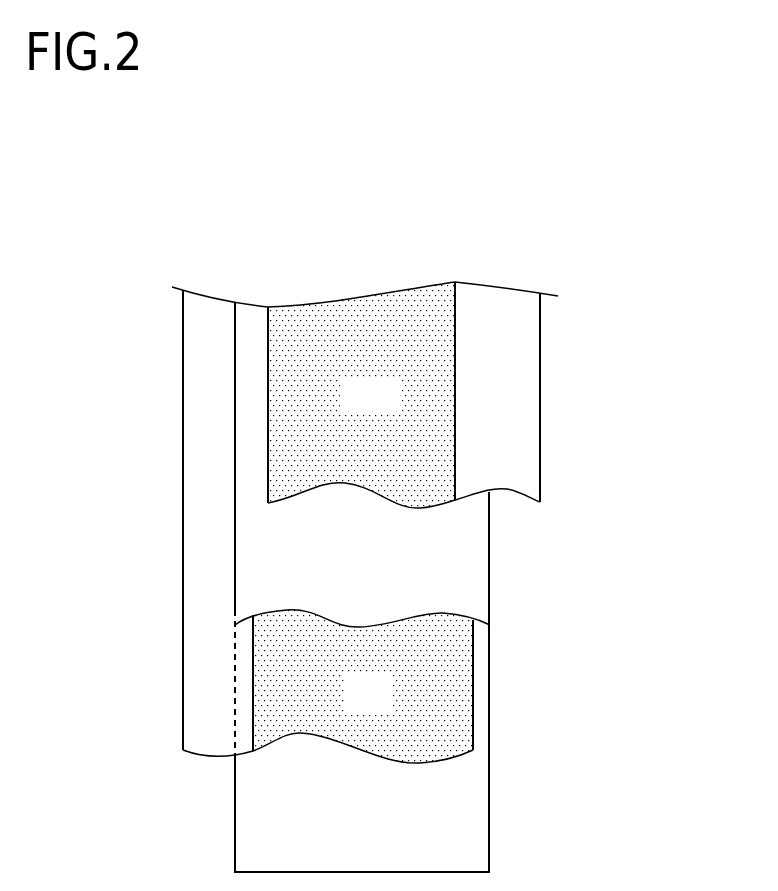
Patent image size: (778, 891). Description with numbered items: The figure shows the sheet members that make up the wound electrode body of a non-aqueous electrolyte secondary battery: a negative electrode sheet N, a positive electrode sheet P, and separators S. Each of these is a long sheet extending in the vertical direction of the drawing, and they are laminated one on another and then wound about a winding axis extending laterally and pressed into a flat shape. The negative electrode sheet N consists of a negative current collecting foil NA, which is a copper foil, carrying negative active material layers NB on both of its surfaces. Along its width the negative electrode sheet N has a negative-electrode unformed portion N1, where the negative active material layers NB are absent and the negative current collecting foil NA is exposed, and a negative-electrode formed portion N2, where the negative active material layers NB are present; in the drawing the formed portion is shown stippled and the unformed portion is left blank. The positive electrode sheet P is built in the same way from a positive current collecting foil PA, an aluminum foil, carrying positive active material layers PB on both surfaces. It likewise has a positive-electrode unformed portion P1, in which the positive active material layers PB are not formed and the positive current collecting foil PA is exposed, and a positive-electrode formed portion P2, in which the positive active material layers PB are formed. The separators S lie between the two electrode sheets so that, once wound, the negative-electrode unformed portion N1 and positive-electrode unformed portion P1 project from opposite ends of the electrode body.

The negative electrode sheet N is at (379, 363).
The negative-electrode unformed portion N1 is at (497, 397).
The negative-electrode formed portion N2 is at (361, 395).
The negative current collecting foil NA is at (528, 324).
The negative active material layers NB is at (423, 318).
The separators S is at (278, 568).
The positive electrode sheet P is at (339, 686).
The positive-electrode unformed portion P1 is at (218, 685).
The positive-electrode formed portion P2 is at (363, 686).
The positive current collecting foil PA is at (195, 729).
The positive active material layers PB is at (458, 688).